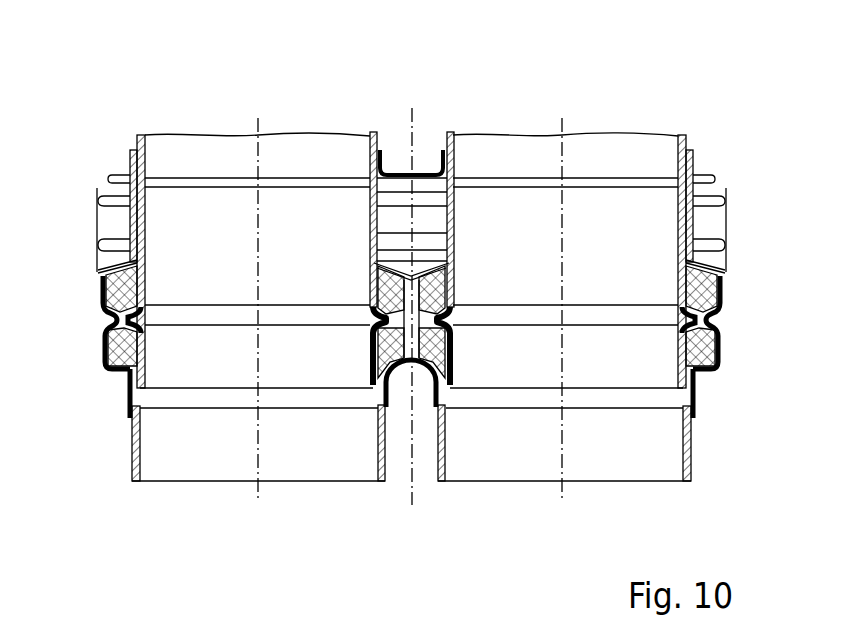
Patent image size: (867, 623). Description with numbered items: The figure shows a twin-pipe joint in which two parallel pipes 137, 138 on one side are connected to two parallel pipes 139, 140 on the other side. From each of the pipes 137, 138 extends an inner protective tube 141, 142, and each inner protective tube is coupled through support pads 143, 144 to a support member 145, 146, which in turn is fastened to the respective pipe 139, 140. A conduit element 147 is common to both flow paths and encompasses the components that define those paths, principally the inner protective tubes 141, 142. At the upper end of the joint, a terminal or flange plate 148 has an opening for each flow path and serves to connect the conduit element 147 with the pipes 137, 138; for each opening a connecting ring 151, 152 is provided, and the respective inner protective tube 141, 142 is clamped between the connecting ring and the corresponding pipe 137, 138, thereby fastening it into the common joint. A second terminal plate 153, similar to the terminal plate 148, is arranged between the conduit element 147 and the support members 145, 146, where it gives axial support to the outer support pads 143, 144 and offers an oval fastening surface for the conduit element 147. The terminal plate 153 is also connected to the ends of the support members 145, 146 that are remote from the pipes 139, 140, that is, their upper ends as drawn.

The pipe 137 is at (143, 137).
The pipe 138 is at (448, 130).
The pipe 139 is at (143, 483).
The pipe 140 is at (450, 478).
The inner protective tube 141 is at (145, 228).
The inner protective tube 142 is at (455, 237).
The support pad 143 is at (102, 333).
The support pad 144 is at (720, 312).
The support member 145 is at (107, 372).
The support member 146 is at (698, 413).
The conduit element 147 is at (715, 200).
The terminal plate 148 is at (398, 172).
The connecting ring 151 is at (338, 608).
The connecting ring 152 is at (529, 619).
The terminal plate 153 is at (723, 265).